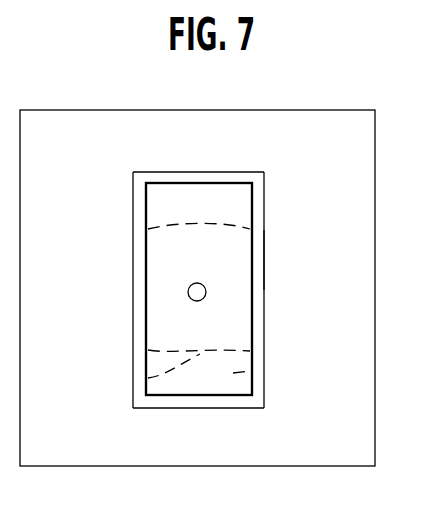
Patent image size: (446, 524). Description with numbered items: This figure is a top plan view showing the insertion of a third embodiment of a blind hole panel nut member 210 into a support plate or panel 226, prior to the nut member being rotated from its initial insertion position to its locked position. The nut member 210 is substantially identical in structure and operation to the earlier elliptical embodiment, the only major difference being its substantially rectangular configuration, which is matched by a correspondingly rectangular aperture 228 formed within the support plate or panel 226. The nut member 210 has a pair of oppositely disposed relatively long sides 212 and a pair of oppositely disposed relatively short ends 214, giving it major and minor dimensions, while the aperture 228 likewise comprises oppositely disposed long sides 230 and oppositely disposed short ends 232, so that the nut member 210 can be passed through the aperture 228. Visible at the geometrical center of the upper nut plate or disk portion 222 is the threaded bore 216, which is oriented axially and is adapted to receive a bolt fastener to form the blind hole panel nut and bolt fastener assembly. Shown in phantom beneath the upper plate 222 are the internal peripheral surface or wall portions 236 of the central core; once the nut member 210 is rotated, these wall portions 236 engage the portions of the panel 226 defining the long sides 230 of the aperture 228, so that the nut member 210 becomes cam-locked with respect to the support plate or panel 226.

The blind hole panel nut member 210 is at (197, 203).
The long sides 212 is at (146, 224).
The short ends 214 is at (168, 183).
The threaded bore 216 is at (206, 293).
The upper nut plate or disk portion 222 is at (233, 374).
The support plate or panel 226 is at (345, 152).
The aperture 228 is at (266, 258).
The long sides of aperture 230 is at (133, 306).
The short ends of aperture 232 is at (143, 172).
The internal peripheral surface or wall portions 236 is at (165, 377).